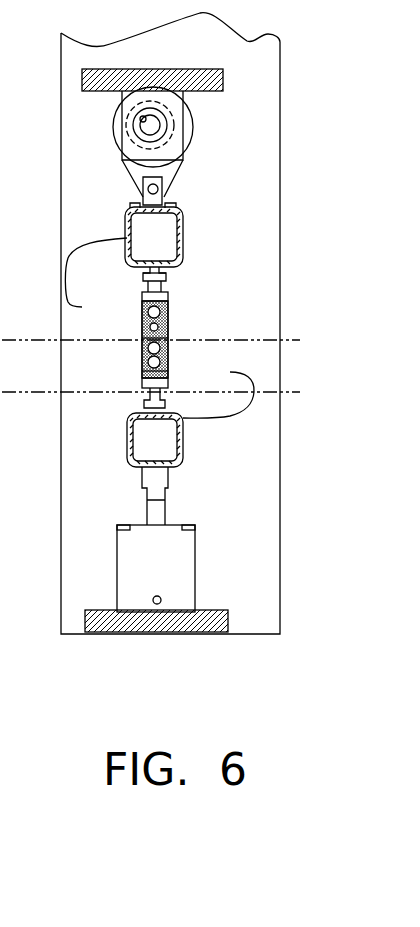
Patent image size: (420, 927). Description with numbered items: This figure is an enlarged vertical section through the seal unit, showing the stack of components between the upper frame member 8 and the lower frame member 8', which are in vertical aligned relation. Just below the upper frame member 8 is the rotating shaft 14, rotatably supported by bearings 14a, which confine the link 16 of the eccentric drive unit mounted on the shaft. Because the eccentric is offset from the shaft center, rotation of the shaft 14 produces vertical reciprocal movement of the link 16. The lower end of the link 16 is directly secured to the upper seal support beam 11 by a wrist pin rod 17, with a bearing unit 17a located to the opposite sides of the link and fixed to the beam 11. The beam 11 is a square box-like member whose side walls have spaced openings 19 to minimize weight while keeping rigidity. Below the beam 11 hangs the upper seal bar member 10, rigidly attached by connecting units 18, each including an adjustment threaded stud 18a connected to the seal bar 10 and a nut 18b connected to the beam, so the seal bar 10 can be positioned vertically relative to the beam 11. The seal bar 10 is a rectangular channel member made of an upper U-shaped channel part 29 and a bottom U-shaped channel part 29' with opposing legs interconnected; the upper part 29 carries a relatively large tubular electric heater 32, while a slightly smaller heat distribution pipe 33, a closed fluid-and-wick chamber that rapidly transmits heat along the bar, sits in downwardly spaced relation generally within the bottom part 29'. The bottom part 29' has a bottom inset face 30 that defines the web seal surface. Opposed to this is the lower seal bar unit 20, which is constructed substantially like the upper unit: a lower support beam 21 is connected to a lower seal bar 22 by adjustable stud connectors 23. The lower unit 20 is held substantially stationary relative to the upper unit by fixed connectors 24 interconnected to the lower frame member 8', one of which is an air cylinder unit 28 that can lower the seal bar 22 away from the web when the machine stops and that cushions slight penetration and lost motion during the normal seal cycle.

The upper frame member 8 is at (152, 55).
The lower frame member 8' is at (180, 596).
The upper seal bar member 10 is at (140, 307).
The upper seal support beam 11 is at (139, 264).
The rotating shaft 14 is at (160, 125).
The bearings 14a is at (122, 97).
The link 16 is at (165, 171).
The wrist pin rod 17 is at (159, 192).
The bearing unit 17a is at (137, 201).
The connecting units 18 is at (166, 279).
The adjustment threaded studs 18a is at (162, 287).
The nut 18b is at (146, 274).
The spaced openings 19 is at (183, 239).
The lower seal bar unit 20 is at (169, 371).
The support beam 21 is at (184, 443).
The lower seal bar 22 is at (138, 369).
The adjustable stud connectors 23 is at (146, 405).
The fixed connectors 24 is at (166, 507).
The air cylinder unit 28 is at (170, 562).
The upper U-shaped channel part 29 is at (206, 448).
The bottom U-shaped channel part 29' is at (116, 351).
The bottom inset face 30 is at (168, 340).
The tubular electric heater 32 is at (160, 323).
The heat distribution pipe 33 is at (141, 334).